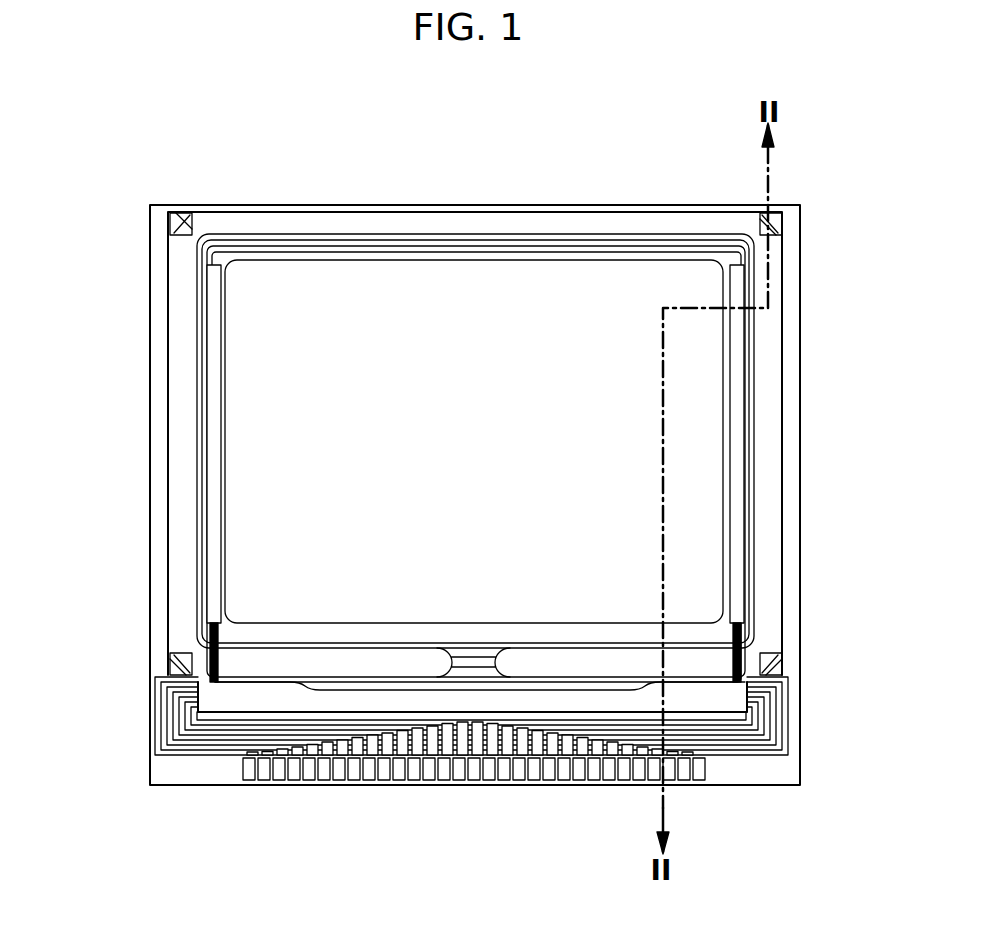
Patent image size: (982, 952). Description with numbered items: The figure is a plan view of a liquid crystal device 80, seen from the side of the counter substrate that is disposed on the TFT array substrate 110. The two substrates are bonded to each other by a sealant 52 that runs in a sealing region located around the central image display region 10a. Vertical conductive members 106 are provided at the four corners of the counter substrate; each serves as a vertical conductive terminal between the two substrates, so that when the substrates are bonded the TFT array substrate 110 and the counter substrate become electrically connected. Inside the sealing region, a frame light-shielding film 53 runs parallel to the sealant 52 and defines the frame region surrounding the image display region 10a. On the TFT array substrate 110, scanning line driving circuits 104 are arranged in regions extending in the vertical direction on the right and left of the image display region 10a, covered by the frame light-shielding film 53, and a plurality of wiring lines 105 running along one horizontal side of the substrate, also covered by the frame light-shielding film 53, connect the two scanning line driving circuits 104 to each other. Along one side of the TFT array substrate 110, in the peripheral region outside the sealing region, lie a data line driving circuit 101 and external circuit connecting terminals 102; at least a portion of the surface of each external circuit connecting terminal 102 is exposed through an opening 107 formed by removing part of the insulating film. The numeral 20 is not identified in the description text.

The liquid crystal device 80 is at (80, 60).
The TFT array substrate 110 is at (285, 208).
The wiring lines 105 is at (423, 248).
The upper frame 20 is at (500, 214).
The vertical conductive members 106 is at (185, 215).
The sealant 52 is at (770, 372).
The scanning line driving circuits 104 is at (215, 525).
The image display region 10a is at (275, 392).
The frame light-shielding film 53 is at (636, 635).
The data line driving circuit 101 is at (195, 688).
The external circuit connecting terminal 102 is at (428, 778).
The opening 107 is at (503, 776).